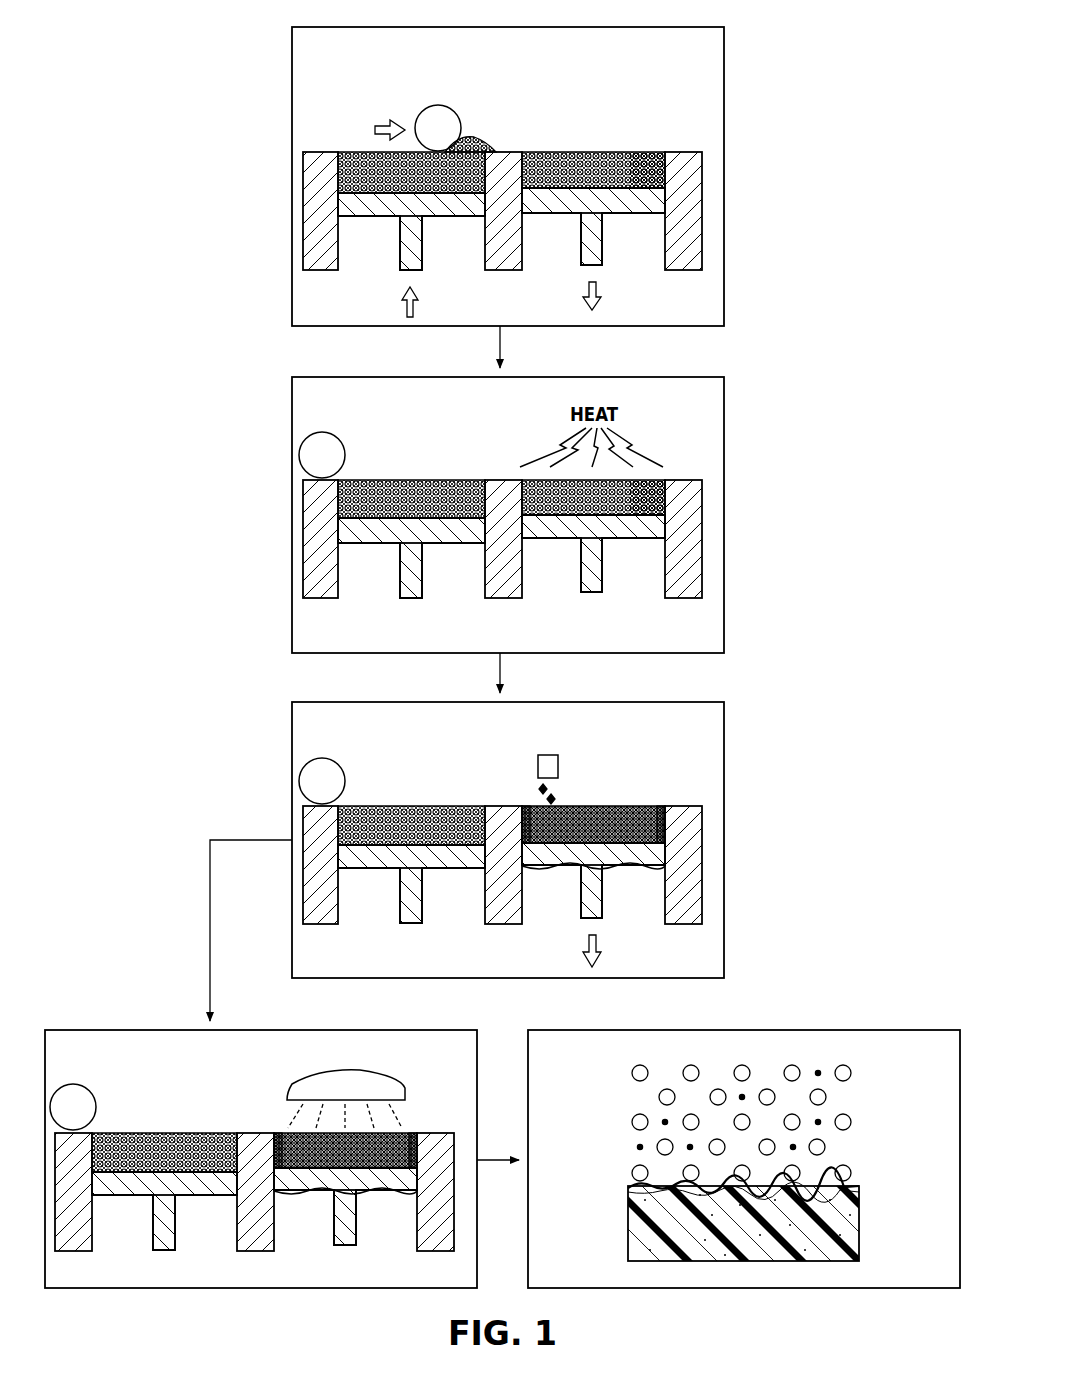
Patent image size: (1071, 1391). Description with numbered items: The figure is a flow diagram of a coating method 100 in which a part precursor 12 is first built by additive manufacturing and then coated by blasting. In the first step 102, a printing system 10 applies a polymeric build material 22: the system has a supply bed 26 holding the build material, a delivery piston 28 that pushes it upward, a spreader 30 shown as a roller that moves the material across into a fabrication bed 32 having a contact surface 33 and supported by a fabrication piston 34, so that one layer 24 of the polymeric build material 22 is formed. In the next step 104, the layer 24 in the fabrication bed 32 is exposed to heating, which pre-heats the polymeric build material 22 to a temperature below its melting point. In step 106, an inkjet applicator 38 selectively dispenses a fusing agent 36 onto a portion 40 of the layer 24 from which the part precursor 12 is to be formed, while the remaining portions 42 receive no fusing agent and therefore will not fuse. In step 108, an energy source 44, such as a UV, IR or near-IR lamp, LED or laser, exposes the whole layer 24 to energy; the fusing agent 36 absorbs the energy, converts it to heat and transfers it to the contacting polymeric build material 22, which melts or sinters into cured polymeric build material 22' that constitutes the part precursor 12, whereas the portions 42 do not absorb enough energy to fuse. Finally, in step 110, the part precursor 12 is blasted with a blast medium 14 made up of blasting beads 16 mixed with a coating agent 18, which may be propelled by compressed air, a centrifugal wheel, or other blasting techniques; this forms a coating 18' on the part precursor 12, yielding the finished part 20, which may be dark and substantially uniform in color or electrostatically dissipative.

The coating method 100 is at (192, 62).
The printing system 10 is at (406, 76).
The spreader 30 is at (440, 128).
The supply bed 26 is at (345, 152).
The polymeric build material 22 is at (378, 625).
The fabrication bed 32 is at (528, 152).
The layer 24 is at (642, 142).
The contact surface 33 is at (670, 195).
The fabrication piston 34 is at (597, 252).
The delivery piston 28 is at (405, 258).
The applying the polymeric build material 102 is at (724, 178).
The heating the layer 104 is at (724, 512).
The selectively applying the fusing agent 106 is at (724, 838).
The exposing the layer to energy 108 is at (108, 1030).
The forming the coating 110 is at (843, 1030).
The inkjet applicator 38 is at (558, 766).
The fusing agent 36 is at (555, 797).
The portions 42 is at (526, 797).
The portion 40 is at (576, 866).
The part precursor 12 is at (864, 1219).
The cured polymeric build material 22' is at (339, 1103).
The energy source 44 is at (346, 1078).
The blast medium 14 is at (870, 1118).
The coating agent 18 is at (696, 1109).
The blasting beads 16 is at (853, 1171).
The part 20 is at (618, 1223).
The coating 18' is at (785, 1187).